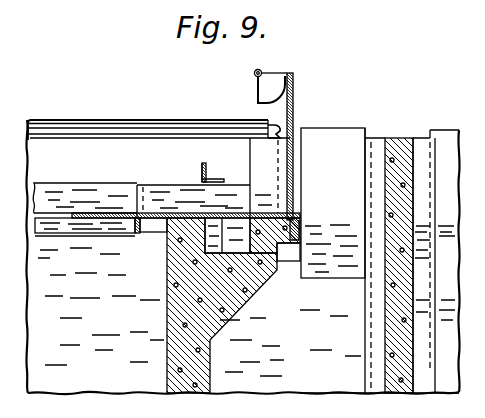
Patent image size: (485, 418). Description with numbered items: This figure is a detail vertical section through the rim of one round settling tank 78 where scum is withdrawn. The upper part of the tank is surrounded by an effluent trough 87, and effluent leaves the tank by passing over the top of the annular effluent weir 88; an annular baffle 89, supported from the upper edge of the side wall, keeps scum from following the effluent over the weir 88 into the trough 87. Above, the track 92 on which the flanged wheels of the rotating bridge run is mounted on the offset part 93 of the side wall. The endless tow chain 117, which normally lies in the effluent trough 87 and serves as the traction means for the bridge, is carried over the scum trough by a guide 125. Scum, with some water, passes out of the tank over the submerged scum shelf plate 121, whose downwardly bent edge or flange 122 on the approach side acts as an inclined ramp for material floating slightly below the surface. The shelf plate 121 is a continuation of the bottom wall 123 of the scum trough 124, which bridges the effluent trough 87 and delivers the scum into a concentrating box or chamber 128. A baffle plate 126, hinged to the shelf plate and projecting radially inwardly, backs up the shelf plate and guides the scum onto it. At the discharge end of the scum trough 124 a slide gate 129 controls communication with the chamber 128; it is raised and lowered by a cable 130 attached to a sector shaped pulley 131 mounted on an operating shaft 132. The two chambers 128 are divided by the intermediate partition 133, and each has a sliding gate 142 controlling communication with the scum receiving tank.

The round settling tank 78 is at (98, 323).
The effluent trough 87 is at (259, 294).
The annular effluent weir 88 is at (160, 234).
The annular baffle 89 is at (58, 238).
The track 92 is at (218, 120).
The offset part of the side wall 93 is at (278, 130).
The endless tow chain 117 is at (214, 174).
The submerged scum shelf plate 121 is at (94, 212).
The downwardly bent edge or flange 122 is at (107, 237).
The bottom wall of the scum trough 123 is at (254, 218).
The scum trough 124 is at (234, 192).
The guide 125 is at (202, 171).
The baffle plate 126 is at (60, 182).
The concentrating box or chamber 128 is at (364, 392).
The slide gate 129 is at (306, 131).
The cable 130 is at (294, 100).
The sector shaped pulley 131 is at (279, 78).
The operating shaft 132 is at (255, 72).
The intermediate partition 133 is at (408, 134).
The sliding gate 142 is at (351, 128).